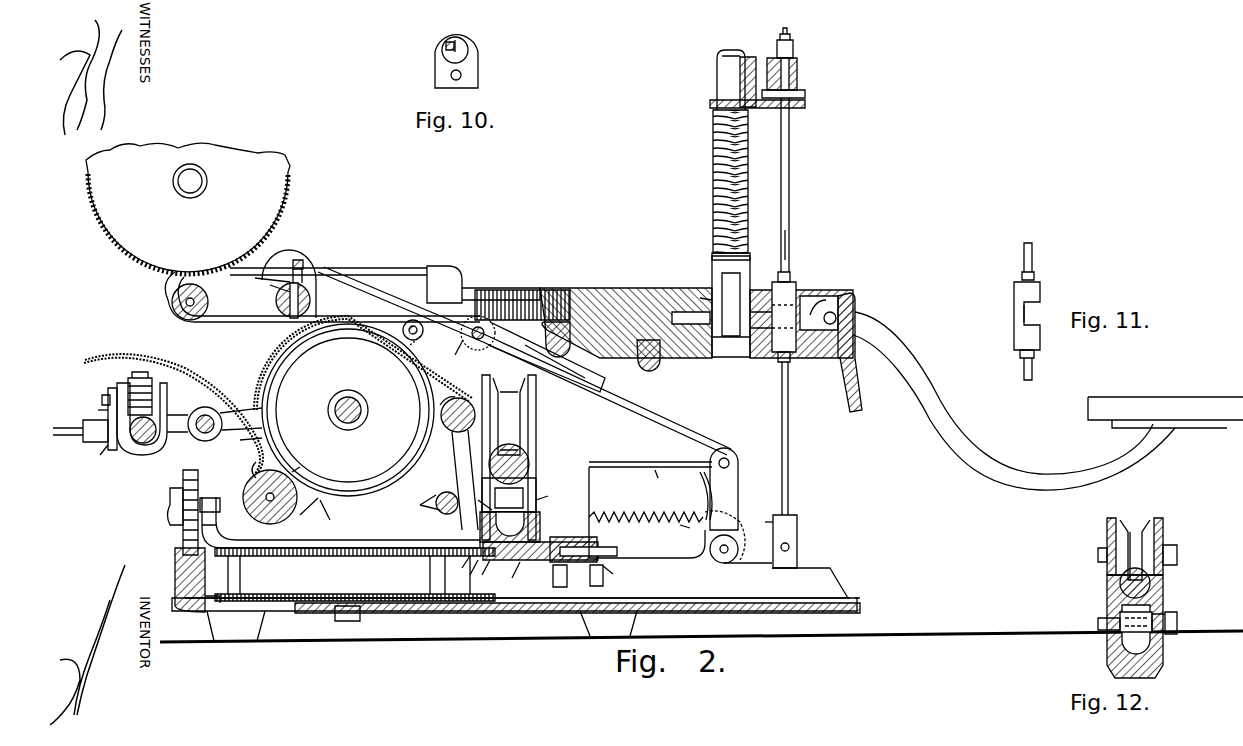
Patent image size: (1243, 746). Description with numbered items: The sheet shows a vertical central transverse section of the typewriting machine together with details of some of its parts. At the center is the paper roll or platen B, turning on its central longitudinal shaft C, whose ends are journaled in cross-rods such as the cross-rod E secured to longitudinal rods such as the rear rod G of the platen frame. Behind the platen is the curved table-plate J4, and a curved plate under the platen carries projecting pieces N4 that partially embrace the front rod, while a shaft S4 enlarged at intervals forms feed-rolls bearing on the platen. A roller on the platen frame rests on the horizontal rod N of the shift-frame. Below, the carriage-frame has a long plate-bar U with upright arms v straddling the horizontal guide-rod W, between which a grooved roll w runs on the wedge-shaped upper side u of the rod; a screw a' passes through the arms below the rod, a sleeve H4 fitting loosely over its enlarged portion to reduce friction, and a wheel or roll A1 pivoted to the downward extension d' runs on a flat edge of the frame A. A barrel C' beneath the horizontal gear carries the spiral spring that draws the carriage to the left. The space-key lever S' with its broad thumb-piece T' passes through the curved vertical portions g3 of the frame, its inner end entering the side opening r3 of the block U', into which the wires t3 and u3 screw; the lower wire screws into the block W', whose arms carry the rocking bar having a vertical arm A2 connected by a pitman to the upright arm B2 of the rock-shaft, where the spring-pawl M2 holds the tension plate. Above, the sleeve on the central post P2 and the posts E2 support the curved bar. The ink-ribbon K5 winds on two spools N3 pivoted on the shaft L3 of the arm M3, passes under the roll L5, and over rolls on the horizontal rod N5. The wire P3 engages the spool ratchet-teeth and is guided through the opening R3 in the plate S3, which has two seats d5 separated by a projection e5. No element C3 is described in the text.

In FIG. 2, the paper roll or platen B is at (338, 410).
In FIG. 2, the central longitudinal shaft C is at (366, 410).
In FIG. 2, the frame A is at (700, 358).
In FIG. 2, the spools N3 is at (188, 208).
In FIG. 2, the horizontal shaft L3 is at (198, 178).
In FIG. 2, the wire P3 is at (345, 266).
In FIG. 10, the wire P3 is at (440, 52).
In FIG. 2, the ink-ribbon K5 is at (165, 293).
In FIG. 2, the roll L5 is at (170, 310).
In FIG. 2, the roller C3 is at (280, 310).
In FIG. 2, the plate S3 is at (290, 262).
In FIG. 10, the plate S3 is at (478, 72).
In FIG. 2, the arm M3 is at (303, 264).
In FIG. 2, the horizontal rod N5 is at (488, 338).
In FIG. 2, the shaft S4 is at (422, 335).
In FIG. 2, the projecting pieces N4 is at (462, 400).
In FIG. 2, the table-plate J4 is at (155, 378).
In FIG. 2, the downward extension d' is at (257, 497).
In FIG. 2, the longitudinal rod G is at (212, 411).
In FIG. 2, the cross-rod E is at (259, 413).
In FIG. 2, the horizontal rod N is at (138, 450).
In FIG. 2, the wheel or roll A1 is at (188, 455).
In FIG. 2, the upright arm B2 is at (596, 488).
In FIG. 2, the spring-pawl M2 is at (646, 508).
In FIG. 2, the vertical arm A2 is at (738, 487).
In FIG. 2, the block W' is at (803, 539).
In FIG. 2, the block U' is at (765, 323).
In FIG. 11, the block U' is at (1007, 316).
In FIG. 2, the central post P2 is at (713, 188).
In FIG. 2, the upright posts E2 is at (717, 82).
In FIG. 2, the upper wire t3 is at (789, 172).
In FIG. 11, the upper wire t3 is at (1032, 256).
In FIG. 2, the lower wire u3 is at (790, 412).
In FIG. 11, the lower wire u3 is at (1024, 372).
In FIG. 2, the space-key lever S' is at (1014, 401).
In FIG. 2, the thumb-piece T' is at (1165, 398).
In FIG. 2, the curved vertical portions g3 is at (855, 300).
In FIG. 2, the plate-bar U is at (510, 528).
In FIG. 12, the plate-bar U is at (1112, 626).
In FIG. 2, the grooved roll w is at (512, 400).
In FIG. 12, the grooved roll w is at (1140, 540).
In FIG. 2, the upright arms v is at (536, 450).
In FIG. 12, the upright arms v is at (1107, 573).
In FIG. 2, the upper side of guide-rod u is at (529, 468).
In FIG. 12, the upper side of guide-rod u is at (1120, 588).
In FIG. 2, the guide-rod W is at (522, 489).
In FIG. 12, the guide-rod W is at (1151, 588).
In FIG. 2, the screw a' is at (548, 493).
In FIG. 12, the screw a' is at (1110, 624).
In FIG. 12, the sleeve H4 is at (1170, 634).
In FIG. 10, the opening R3 is at (478, 58).
In FIG. 10, the notches or seats d5 is at (446, 42).
In FIG. 10, the projection e5 is at (456, 40).
In FIG. 11, the side opening r3 is at (1034, 318).
In FIG. 2, the barrel C' is at (569, 637).